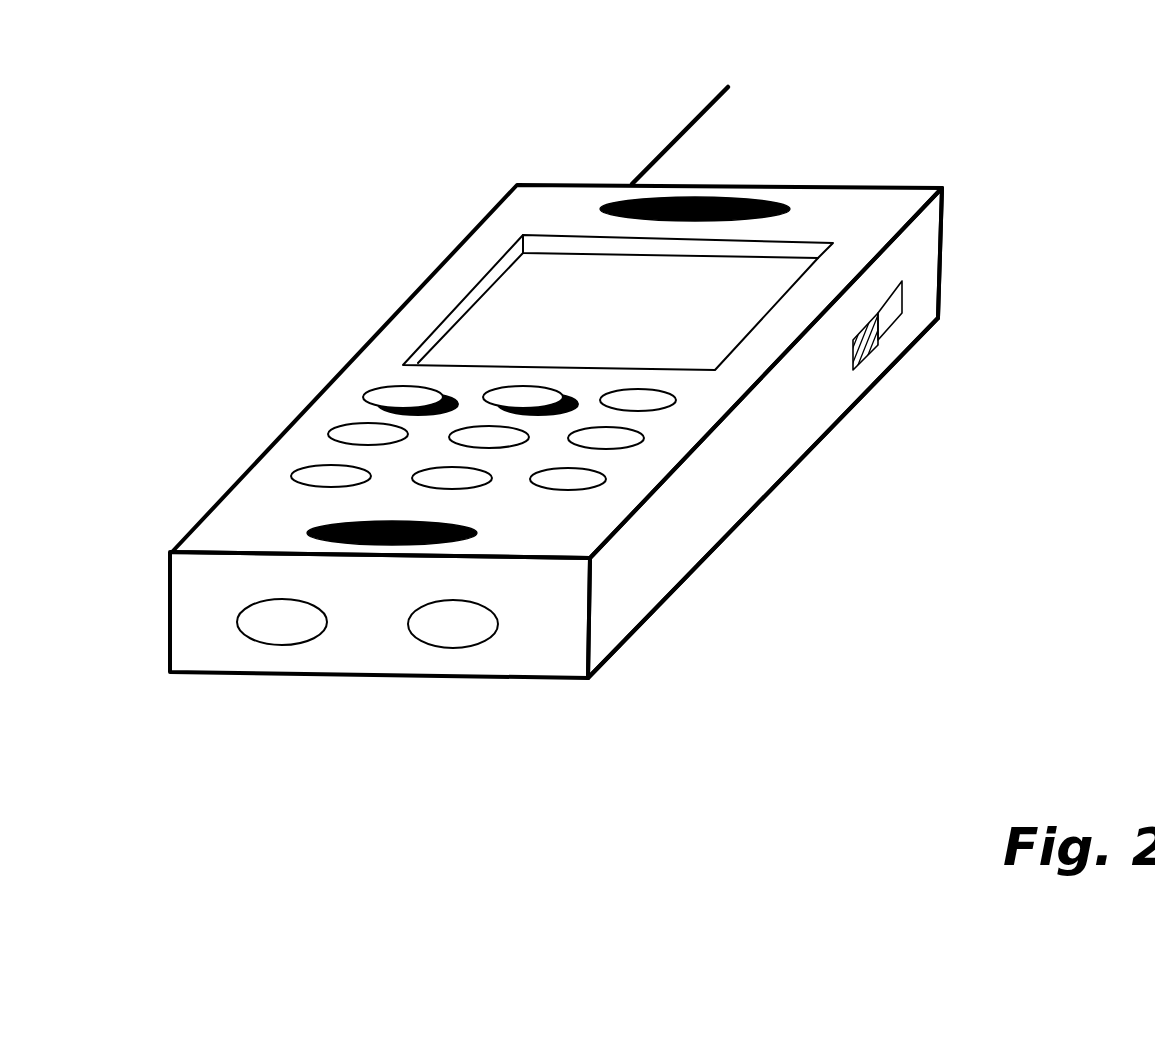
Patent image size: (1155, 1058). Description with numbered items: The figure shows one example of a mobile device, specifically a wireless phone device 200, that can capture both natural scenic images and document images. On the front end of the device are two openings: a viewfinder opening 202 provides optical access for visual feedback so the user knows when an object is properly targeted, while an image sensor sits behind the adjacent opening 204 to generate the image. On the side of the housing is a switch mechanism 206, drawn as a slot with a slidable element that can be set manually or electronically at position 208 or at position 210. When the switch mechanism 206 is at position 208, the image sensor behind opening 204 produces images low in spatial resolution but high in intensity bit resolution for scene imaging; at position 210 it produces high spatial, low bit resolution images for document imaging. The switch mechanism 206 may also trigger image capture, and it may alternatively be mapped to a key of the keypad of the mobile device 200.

The wireless phone device 200 is at (370, 118).
The viewfinder opening 202 is at (280, 632).
The opening 204 is at (452, 640).
The switch mechanism 206 is at (937, 322).
The position 208 is at (870, 345).
The position 210 is at (902, 292).